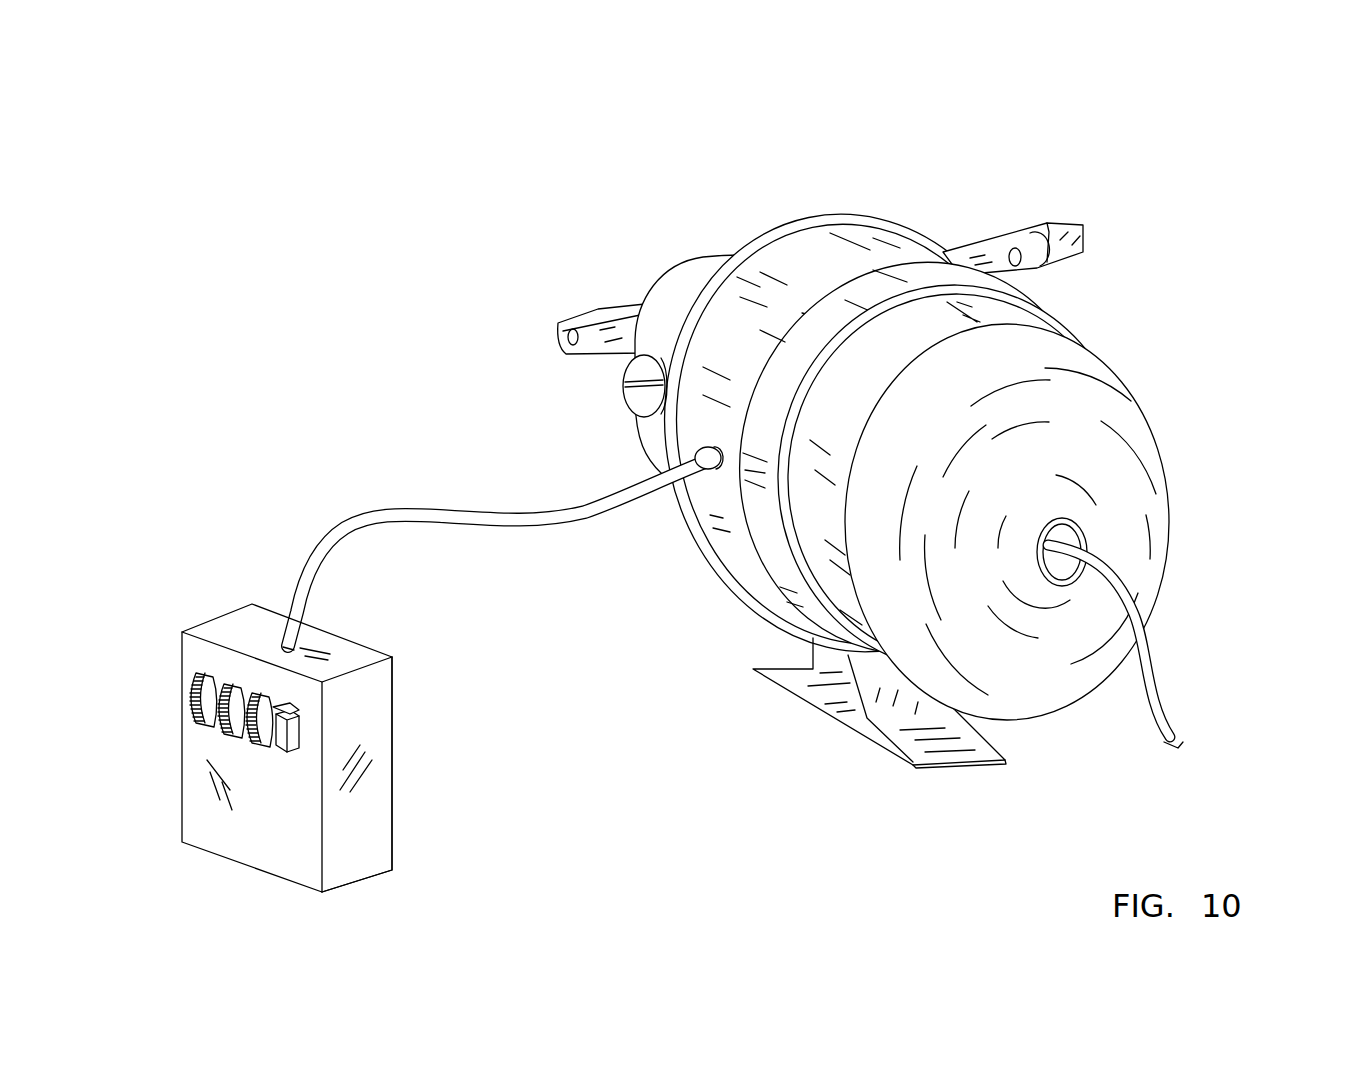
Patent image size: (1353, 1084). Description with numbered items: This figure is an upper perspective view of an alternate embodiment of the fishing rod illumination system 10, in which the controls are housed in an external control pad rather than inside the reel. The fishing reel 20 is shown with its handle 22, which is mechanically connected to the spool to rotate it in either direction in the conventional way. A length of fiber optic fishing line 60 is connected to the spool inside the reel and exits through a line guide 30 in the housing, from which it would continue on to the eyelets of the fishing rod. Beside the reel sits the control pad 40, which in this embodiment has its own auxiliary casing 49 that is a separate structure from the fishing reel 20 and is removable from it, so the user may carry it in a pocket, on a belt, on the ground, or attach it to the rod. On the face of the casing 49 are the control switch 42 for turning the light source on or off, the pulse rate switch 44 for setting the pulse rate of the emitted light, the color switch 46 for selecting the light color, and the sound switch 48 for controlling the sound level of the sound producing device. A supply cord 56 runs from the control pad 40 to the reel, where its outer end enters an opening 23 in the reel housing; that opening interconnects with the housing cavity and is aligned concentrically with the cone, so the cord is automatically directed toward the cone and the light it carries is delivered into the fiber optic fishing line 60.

The fishing rod illumination system 10 is at (258, 145).
The fishing reel 20 is at (683, 294).
The handle 22 is at (1083, 233).
The opening 23 is at (660, 467).
The line guide 30 is at (1083, 570).
The control pad 40 is at (397, 702).
The control switch 42 is at (190, 692).
The pulse rate switch 44 is at (236, 724).
The color switch 46 is at (264, 724).
The sound switch 48 is at (299, 718).
The casing 49 is at (360, 863).
The supply cord 56 is at (463, 512).
The fiber optic fishing line 60 is at (1172, 728).